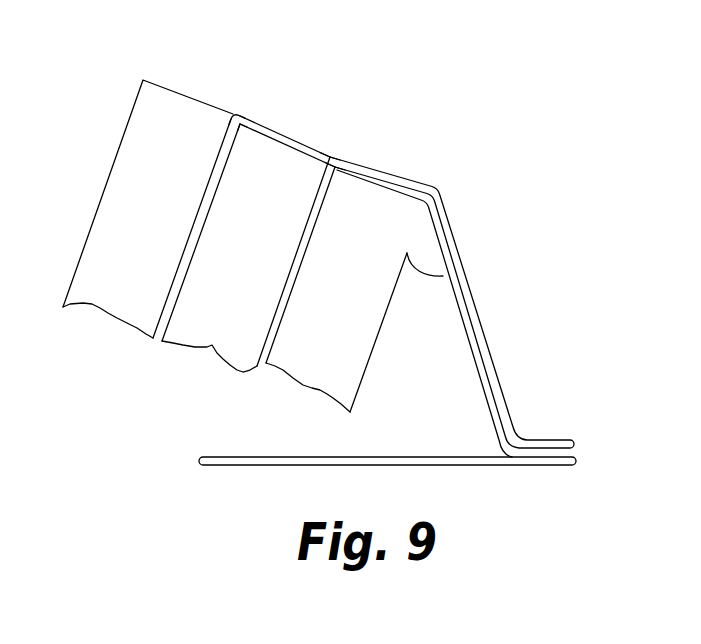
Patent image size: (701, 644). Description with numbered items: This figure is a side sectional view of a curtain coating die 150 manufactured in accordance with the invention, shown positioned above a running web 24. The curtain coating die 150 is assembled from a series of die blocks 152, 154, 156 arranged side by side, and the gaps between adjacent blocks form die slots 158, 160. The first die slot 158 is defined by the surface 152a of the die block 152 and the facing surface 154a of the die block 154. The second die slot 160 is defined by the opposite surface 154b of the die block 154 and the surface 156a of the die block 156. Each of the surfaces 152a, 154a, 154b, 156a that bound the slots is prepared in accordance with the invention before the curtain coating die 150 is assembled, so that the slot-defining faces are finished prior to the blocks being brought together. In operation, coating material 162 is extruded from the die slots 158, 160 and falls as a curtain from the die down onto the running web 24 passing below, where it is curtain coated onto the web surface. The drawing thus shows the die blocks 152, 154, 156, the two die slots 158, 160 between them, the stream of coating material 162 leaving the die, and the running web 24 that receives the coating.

The curtain coating die 150 is at (318, 243).
The die block 152 is at (148, 209).
The surface 152a is at (207, 173).
The die block 154 is at (246, 248).
The surface 154a is at (210, 210).
The surface 154b is at (295, 253).
The die block 156 is at (389, 312).
The surface 156a is at (307, 247).
The die slot 158 is at (223, 137).
The die slot 160 is at (325, 168).
The coating material 162 is at (476, 310).
The running web 24 is at (272, 466).